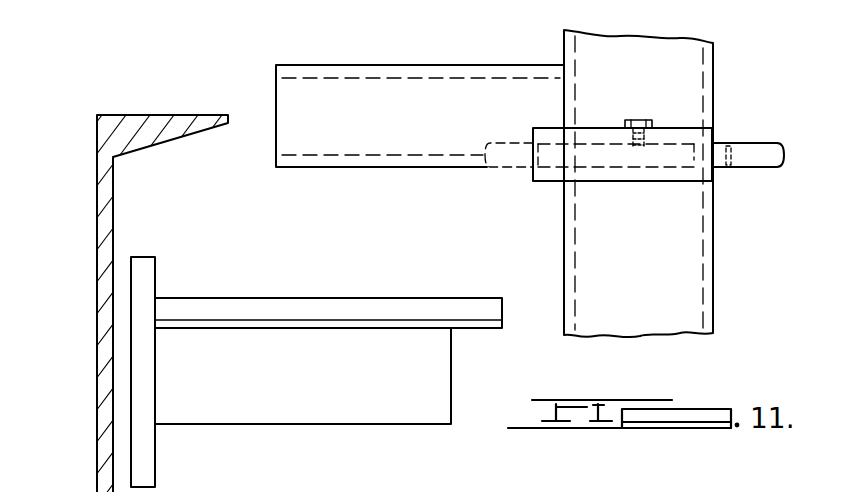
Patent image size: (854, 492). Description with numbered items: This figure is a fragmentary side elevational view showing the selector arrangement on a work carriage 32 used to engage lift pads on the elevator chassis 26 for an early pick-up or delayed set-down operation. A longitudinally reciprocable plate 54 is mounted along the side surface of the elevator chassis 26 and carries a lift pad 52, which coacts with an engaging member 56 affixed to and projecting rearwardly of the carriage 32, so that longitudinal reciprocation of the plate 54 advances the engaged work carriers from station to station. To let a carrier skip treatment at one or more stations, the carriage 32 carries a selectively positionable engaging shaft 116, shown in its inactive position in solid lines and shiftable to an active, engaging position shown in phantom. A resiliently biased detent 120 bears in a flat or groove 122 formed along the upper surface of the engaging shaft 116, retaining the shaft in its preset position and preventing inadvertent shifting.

The elevator chassis 26 is at (105, 197).
The carriage 32 is at (714, 243).
The lift pad 52 is at (296, 308).
The longitudinally reciprocable plate 54 is at (148, 276).
The engaging member 56 is at (332, 88).
The engaging shaft 116 is at (756, 150).
The resiliently biased detent 120 is at (645, 119).
The flat or groove 122 is at (670, 149).